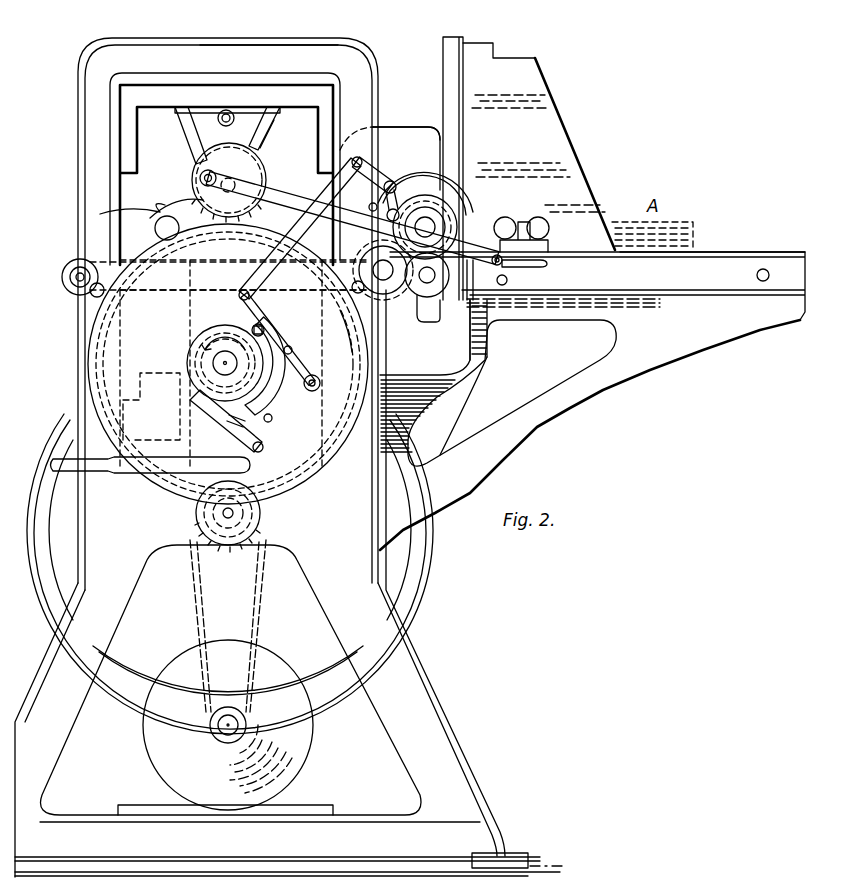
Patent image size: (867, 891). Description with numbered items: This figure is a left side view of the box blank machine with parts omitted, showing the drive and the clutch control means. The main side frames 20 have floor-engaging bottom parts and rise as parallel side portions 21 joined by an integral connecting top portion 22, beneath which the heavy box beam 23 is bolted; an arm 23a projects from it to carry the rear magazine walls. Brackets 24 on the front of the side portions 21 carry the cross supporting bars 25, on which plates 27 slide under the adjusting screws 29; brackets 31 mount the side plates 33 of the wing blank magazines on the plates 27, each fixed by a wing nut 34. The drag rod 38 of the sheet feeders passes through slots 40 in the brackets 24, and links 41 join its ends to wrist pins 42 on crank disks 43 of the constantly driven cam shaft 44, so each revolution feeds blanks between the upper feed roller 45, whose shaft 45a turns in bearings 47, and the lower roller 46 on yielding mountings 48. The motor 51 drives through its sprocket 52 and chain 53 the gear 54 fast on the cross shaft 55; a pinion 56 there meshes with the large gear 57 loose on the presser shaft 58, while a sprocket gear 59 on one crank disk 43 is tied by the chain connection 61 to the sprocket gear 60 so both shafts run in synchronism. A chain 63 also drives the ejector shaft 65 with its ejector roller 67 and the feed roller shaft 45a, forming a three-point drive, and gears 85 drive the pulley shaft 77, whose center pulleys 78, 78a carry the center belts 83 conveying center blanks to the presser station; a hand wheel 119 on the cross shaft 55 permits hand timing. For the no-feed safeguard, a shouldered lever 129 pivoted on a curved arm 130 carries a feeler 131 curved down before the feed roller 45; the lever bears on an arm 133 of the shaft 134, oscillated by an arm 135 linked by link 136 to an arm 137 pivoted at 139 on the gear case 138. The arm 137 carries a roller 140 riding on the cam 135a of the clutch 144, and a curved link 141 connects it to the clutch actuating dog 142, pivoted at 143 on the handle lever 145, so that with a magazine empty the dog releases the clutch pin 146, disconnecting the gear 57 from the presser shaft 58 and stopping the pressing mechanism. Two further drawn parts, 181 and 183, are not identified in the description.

The main side frames 20 is at (120, 634).
The side portions 21 is at (360, 72).
The connecting top portion 22 is at (250, 50).
The box beam 23 is at (197, 95).
The arm 23a is at (406, 116).
The brackets 24 is at (557, 392).
The cross supporting bars 25 is at (470, 300).
The plates 27 is at (755, 252).
The adjusting screws 29 is at (232, 112).
The brackets 31 is at (545, 247).
The side plates 33 is at (505, 190).
The wing nut 34 is at (550, 231).
The drag rod 38 is at (540, 262).
The slots 40 is at (535, 266).
The links 41 is at (300, 196).
The wrist pins 42 is at (196, 144).
The crank disks 43 is at (240, 160).
The cam shaft 44 is at (242, 183).
The upper feed roller 45 is at (452, 220).
The extended shaft 45a is at (450, 206).
The lower roller 46 is at (475, 330).
The bearings 47 is at (440, 205).
The yielding mountings 48 is at (465, 370).
The motor 51 is at (228, 725).
The sprocket 52 is at (230, 706).
The chain or belt 53 is at (262, 620).
The gear 54 is at (240, 570).
The cross shaft 55 is at (262, 516).
The pinion 56 is at (192, 528).
The large gear 57 is at (98, 336).
The presser shaft 58 is at (227, 366).
The sprocket gear 59 is at (196, 202).
The sprocket gear 60 is at (195, 362).
The chain connection 61 is at (203, 172).
The chain or belt 63 is at (180, 414).
The ejector shaft 65 is at (160, 230).
The ejector roller 67 is at (160, 211).
The pulley shaft 77 is at (345, 333).
The center pulleys 78 is at (370, 262).
The center pulleys 78a is at (62, 277).
The center belts 83 is at (128, 262).
The gears 85 is at (385, 350).
The hand wheel 119 is at (125, 678).
The shouldered lever 129 is at (429, 239).
The curved arms 130 is at (430, 222).
The feeler or finger 131 is at (458, 232).
The arm 133 is at (380, 198).
The shaft 134 is at (402, 186).
The arm 135 is at (372, 175).
The cam 135a is at (270, 422).
The link 136 is at (275, 263).
The arm 137 is at (282, 338).
The gear case 138 is at (105, 313).
The pivot 139 is at (313, 376).
The roller 140 is at (254, 328).
The curved link 141 is at (290, 386).
The clutch actuating dog 142 is at (212, 412).
The pivot 143 is at (264, 447).
The clutch 144 is at (185, 364).
The dog controlling handle lever 145 is at (128, 472).
The clutch pin 146 is at (218, 332).
The strut 181 is at (268, 136).
The strut 183 is at (262, 152).